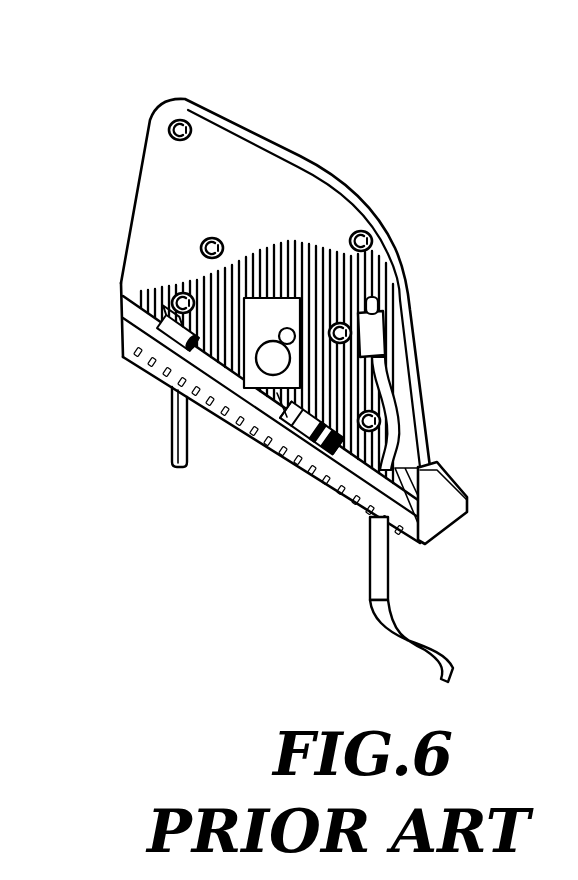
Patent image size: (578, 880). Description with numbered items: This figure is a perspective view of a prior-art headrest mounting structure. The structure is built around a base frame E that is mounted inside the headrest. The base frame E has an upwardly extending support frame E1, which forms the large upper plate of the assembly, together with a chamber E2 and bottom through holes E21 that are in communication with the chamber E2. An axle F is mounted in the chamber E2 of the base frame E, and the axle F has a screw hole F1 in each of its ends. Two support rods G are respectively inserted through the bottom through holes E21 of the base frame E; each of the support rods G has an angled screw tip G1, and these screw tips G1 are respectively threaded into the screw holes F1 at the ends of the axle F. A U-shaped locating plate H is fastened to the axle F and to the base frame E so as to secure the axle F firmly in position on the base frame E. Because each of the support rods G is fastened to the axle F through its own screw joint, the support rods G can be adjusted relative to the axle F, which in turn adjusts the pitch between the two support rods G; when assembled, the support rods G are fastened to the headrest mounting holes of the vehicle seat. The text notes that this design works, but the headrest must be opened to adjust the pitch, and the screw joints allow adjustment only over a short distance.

The support frame E1 is at (220, 160).
The base frame E is at (437, 507).
The chamber E2 is at (373, 510).
The bottom through holes E21 is at (408, 442).
The axle F is at (225, 400).
The screw hole F1 is at (163, 380).
The support rods G is at (172, 467).
The angled screw tip G1 is at (120, 318).
The U-shaped locating plate H is at (288, 420).